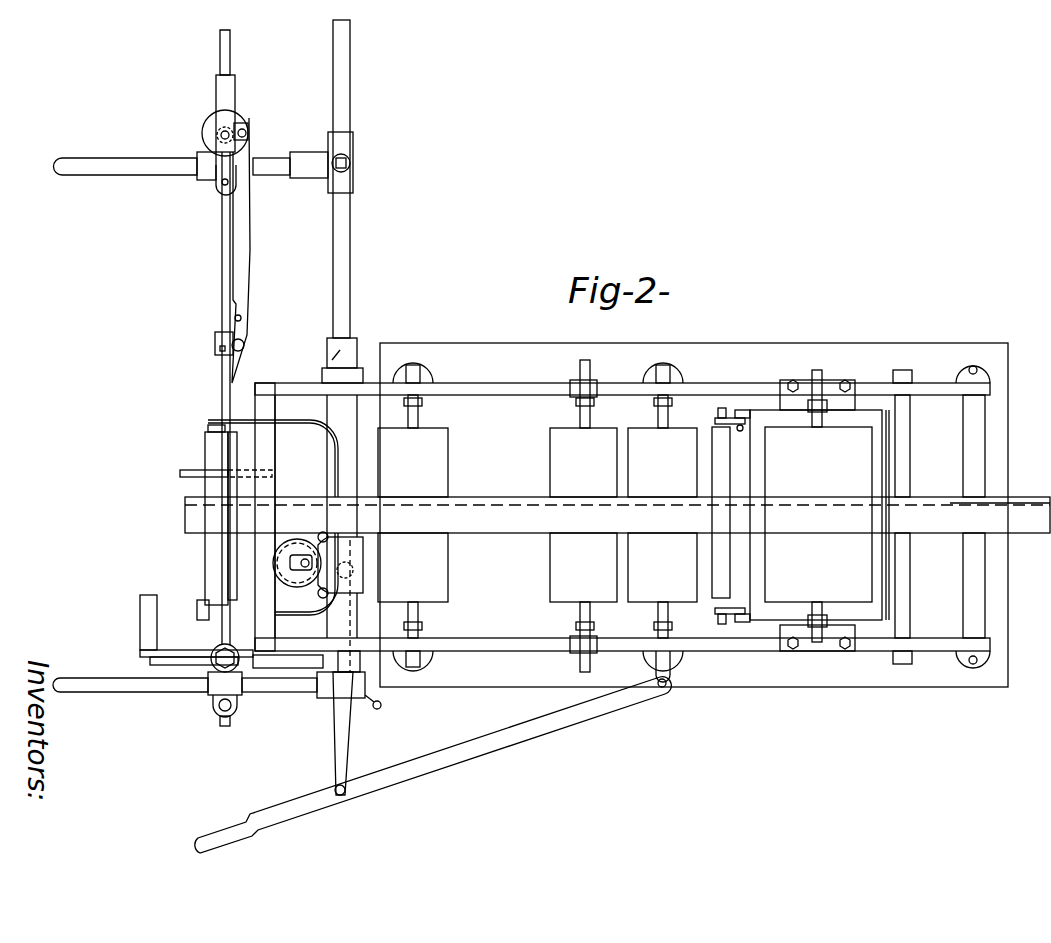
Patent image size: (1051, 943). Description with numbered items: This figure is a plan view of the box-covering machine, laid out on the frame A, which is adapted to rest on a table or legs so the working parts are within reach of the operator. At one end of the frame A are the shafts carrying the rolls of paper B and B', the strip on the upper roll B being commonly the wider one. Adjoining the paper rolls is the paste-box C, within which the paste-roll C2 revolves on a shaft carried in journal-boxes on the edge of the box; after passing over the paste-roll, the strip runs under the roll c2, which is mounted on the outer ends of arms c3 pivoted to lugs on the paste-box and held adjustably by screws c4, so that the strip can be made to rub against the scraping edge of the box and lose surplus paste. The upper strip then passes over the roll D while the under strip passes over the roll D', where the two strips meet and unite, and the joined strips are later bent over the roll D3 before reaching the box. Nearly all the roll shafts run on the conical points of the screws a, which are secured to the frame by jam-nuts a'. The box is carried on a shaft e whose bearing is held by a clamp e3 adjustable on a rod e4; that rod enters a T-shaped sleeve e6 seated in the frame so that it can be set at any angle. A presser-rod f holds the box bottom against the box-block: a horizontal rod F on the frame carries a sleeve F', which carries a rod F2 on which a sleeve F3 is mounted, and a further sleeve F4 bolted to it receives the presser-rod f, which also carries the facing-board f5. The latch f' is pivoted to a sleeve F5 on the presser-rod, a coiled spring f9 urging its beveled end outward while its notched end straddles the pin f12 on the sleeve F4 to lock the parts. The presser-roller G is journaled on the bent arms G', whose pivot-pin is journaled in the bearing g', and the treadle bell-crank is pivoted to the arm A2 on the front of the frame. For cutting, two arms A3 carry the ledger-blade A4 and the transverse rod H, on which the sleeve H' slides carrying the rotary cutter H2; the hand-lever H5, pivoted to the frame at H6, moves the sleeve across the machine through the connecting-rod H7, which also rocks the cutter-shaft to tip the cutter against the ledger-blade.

The frame A is at (622, 504).
The arm A2 is at (288, 661).
The arms A3 is at (283, 506).
The ledger-blade A4 is at (280, 516).
The upper roll of paper B is at (617, 515).
The under roll of paper B' is at (1000, 487).
The horizontal rod F is at (342, 201).
The sleeve F' is at (334, 162).
The rod F2 is at (150, 152).
The sleeve F3 is at (203, 176).
The sleeve F4 is at (226, 98).
The sleeve F5 is at (205, 349).
The presser-rod f is at (213, 337).
The latch f' is at (248, 250).
The facing-board f5 is at (220, 464).
The coiled spring f9 is at (243, 320).
The pin f12 is at (248, 136).
The presser-roller G is at (217, 522).
The bent frame or arms G' is at (273, 508).
The bearing g' is at (196, 630).
The transverse rod H is at (344, 533).
The sleeve H' is at (340, 565).
The rotary cutter H2 is at (297, 562).
The hand-lever H5 is at (445, 745).
The pivot H6 is at (668, 684).
The connecting-rod H7 is at (340, 738).
The shaft e is at (218, 640).
The clamp e3 is at (225, 699).
The rod e4 is at (209, 685).
The T-shaped sleeve e6 is at (382, 698).
The roll D is at (662, 516).
The roll D' is at (583, 516).
The roll D3 is at (413, 516).
The screws a is at (691, 513).
The jam-nuts a' is at (581, 517).
The paste-box C is at (879, 515).
The paste-rolls C2 is at (816, 515).
The roll c2 is at (720, 512).
The arms c3 is at (730, 523).
The screws c4 is at (745, 515).